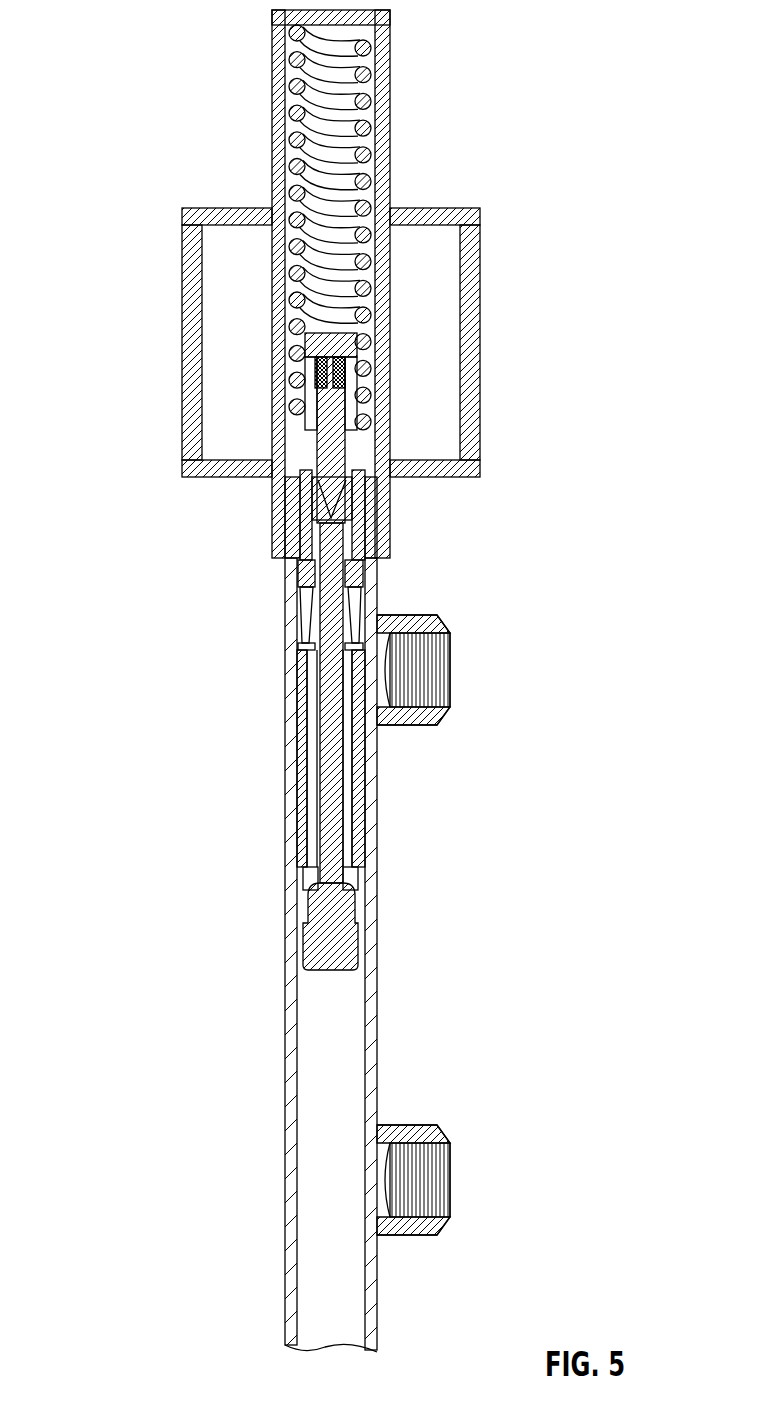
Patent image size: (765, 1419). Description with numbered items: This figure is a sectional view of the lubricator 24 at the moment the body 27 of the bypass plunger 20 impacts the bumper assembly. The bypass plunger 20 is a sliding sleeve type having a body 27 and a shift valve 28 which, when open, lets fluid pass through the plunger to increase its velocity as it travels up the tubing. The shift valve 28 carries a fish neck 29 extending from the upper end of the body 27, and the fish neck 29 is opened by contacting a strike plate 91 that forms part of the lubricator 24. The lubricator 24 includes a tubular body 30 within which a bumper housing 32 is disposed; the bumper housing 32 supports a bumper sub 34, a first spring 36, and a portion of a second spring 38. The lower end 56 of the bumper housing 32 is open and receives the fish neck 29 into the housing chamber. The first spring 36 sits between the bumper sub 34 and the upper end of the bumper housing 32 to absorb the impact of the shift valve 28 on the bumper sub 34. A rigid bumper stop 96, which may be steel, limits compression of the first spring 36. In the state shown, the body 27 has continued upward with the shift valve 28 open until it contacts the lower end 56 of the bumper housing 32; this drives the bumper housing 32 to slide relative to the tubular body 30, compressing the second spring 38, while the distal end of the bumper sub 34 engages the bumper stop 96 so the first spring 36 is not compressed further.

The lubricator 24 is at (135, 129).
The second spring 38 is at (370, 153).
The bumper stop 96 is at (302, 360).
The first spring 36 is at (370, 375).
The bumper sub 34 is at (347, 475).
The fish neck 29 is at (350, 498).
The strike plate 91 is at (305, 518).
The bumper housing 32 is at (300, 570).
The lower end 56 is at (367, 603).
The body 27 is at (300, 685).
The shift valve 28 is at (328, 807).
The tubular body 30 is at (377, 810).
The bypass plunger 20 is at (367, 843).